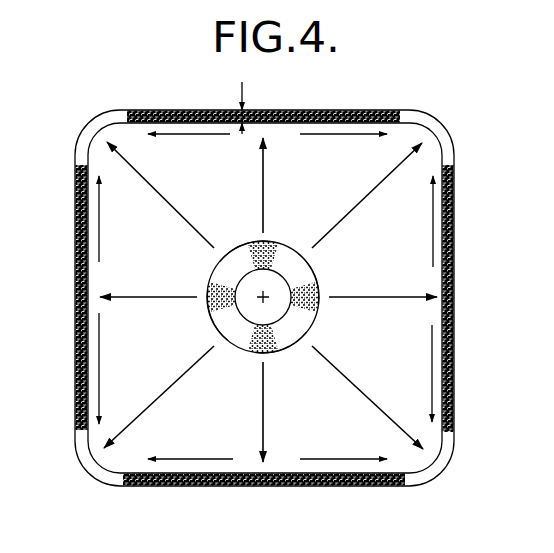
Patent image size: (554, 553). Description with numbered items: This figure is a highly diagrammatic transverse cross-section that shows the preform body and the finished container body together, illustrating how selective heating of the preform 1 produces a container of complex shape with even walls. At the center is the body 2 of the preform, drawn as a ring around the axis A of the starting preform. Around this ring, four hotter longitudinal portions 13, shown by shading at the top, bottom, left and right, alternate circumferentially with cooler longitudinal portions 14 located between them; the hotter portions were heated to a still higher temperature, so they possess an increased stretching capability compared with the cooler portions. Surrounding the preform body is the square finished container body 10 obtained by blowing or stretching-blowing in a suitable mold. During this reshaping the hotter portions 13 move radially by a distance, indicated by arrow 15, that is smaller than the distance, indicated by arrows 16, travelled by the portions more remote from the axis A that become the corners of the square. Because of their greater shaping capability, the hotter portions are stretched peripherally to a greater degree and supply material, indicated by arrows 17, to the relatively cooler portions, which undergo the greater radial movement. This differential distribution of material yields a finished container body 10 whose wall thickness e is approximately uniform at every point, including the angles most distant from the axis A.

The preform 1 is at (314, 270).
The body 2 is at (245, 347).
The finished container body 10 is at (456, 451).
The hotter longitudinal portion 13 is at (252, 248).
The cooler longitudinal portion 14 is at (294, 262).
The arrow 15 is at (268, 148).
The arrows 16 is at (131, 158).
The arrows 17 is at (185, 134).
The axis A is at (265, 300).
The wall thickness e is at (483, 133).